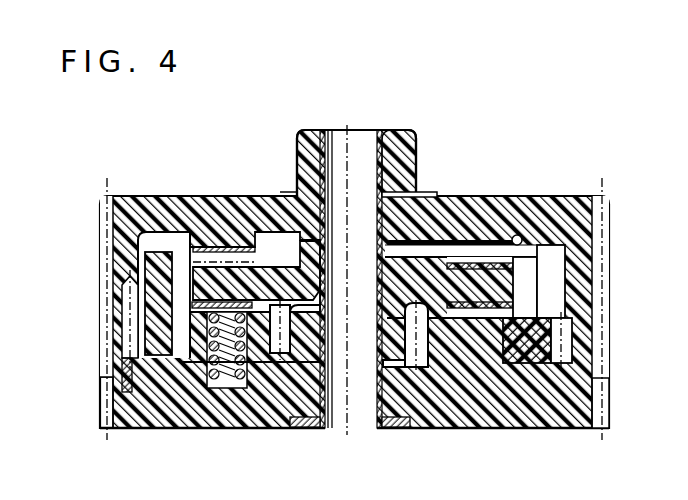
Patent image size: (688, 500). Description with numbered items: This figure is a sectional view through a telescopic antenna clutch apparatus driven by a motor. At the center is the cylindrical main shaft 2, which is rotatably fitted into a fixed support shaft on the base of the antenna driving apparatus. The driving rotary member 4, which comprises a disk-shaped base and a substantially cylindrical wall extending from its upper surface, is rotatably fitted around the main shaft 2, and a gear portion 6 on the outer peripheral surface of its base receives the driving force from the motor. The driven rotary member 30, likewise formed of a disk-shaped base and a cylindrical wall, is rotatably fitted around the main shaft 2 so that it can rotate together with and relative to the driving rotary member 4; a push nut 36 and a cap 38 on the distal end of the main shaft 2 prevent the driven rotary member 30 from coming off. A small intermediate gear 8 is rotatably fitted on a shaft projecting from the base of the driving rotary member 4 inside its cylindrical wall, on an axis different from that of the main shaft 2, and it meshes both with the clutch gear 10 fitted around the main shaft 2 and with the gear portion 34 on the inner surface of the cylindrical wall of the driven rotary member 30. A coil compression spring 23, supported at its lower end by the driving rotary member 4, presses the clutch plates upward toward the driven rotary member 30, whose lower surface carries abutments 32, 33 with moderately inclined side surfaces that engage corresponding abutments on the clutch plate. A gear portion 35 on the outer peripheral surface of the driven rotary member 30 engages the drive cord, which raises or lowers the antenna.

The main shaft 2 is at (376, 142).
The driving rotary member 4 is at (478, 430).
The gear portion 6 is at (104, 398).
The intermediate gear 8 is at (548, 318).
The clutch gear 10 is at (394, 245).
The coil compression spring 23 is at (268, 430).
The driven rotary member 30 is at (130, 196).
The abutment 32 is at (258, 235).
The abutment 33 is at (515, 235).
The gear portion 34 is at (128, 332).
The gear portion 35 is at (109, 262).
The push nut 36 is at (437, 193).
The cap 38 is at (414, 164).